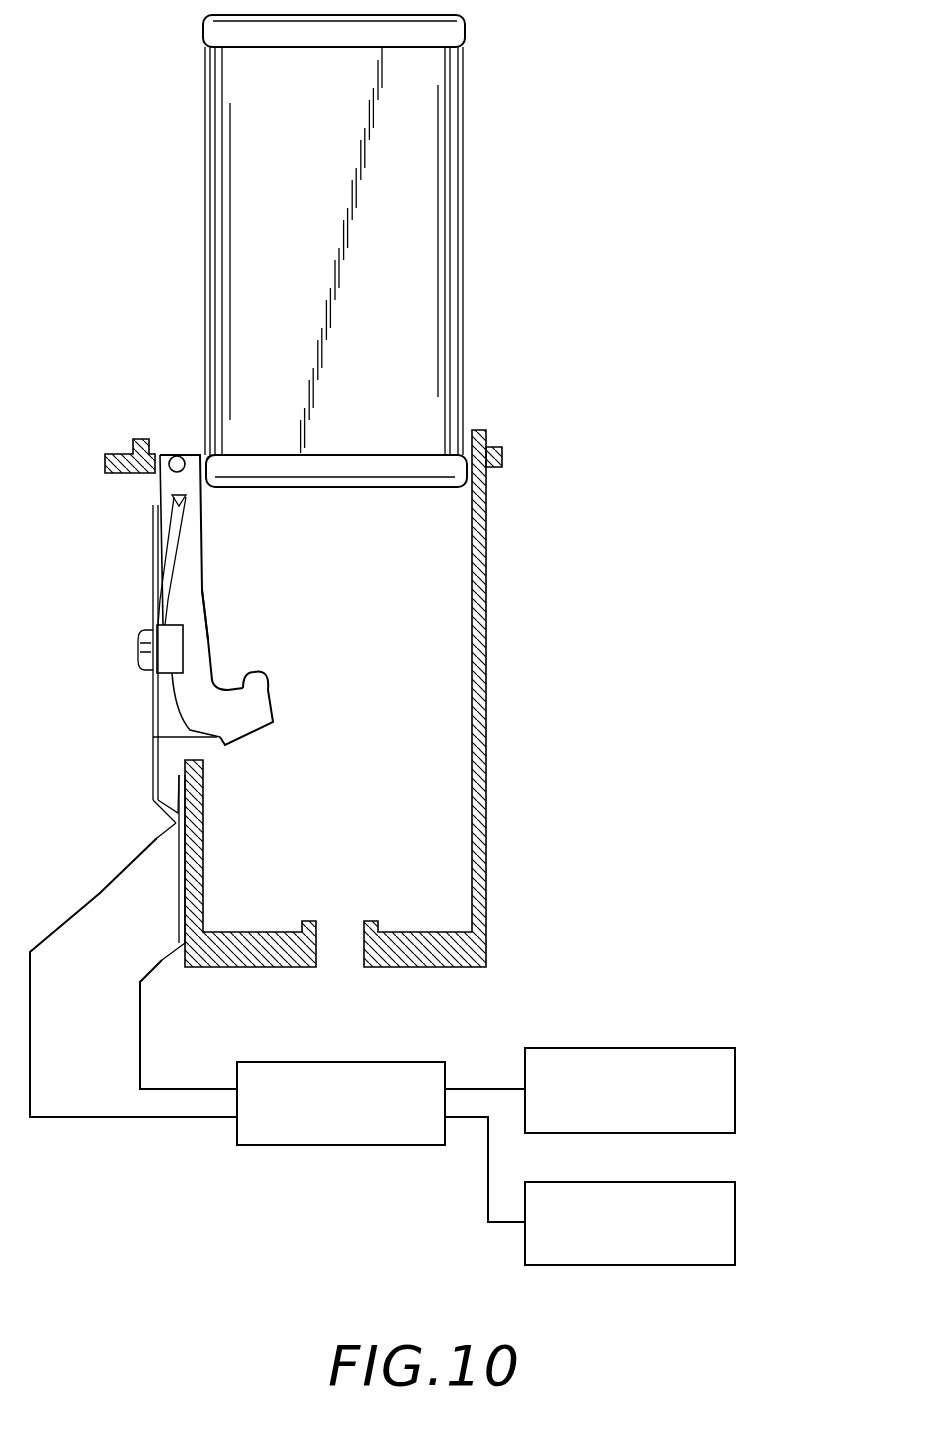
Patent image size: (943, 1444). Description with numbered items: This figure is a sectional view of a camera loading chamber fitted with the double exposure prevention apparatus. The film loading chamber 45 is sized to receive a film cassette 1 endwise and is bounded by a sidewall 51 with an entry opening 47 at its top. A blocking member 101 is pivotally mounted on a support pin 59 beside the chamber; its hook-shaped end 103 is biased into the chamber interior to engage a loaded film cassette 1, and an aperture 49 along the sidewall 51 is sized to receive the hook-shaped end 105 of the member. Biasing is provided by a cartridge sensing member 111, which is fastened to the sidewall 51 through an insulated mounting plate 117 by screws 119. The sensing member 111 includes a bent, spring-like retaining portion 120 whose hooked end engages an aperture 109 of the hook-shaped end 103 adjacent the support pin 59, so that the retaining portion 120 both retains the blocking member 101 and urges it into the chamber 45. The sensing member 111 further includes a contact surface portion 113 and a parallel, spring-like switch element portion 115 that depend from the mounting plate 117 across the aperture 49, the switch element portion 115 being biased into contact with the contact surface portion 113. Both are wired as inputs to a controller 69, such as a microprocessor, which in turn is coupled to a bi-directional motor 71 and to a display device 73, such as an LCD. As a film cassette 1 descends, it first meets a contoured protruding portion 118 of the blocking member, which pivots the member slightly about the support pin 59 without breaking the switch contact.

The film cassette 1 is at (465, 97).
The film loading chamber 45 is at (487, 818).
The entry opening 47 is at (468, 432).
The aperture 49 is at (200, 758).
The sidewall 51 is at (190, 872).
The support pin 59 is at (177, 456).
The controller 69 is at (352, 1147).
The bi-directional motor 71 is at (640, 1048).
The display device 73 is at (710, 1182).
The blocking member 101 is at (190, 548).
The hook-shaped end 103 is at (273, 692).
The hook-shaped end 105 is at (185, 738).
The aperture 109 is at (172, 497).
The cartridge sensing member 111 is at (153, 708).
The contact surface portion 113 is at (158, 815).
The switch element portion 115 is at (178, 910).
The insulated mounting plate 117 is at (209, 622).
The protruding portion 118 is at (208, 640).
The screws 119 is at (138, 641).
The retaining portion 120 is at (158, 572).